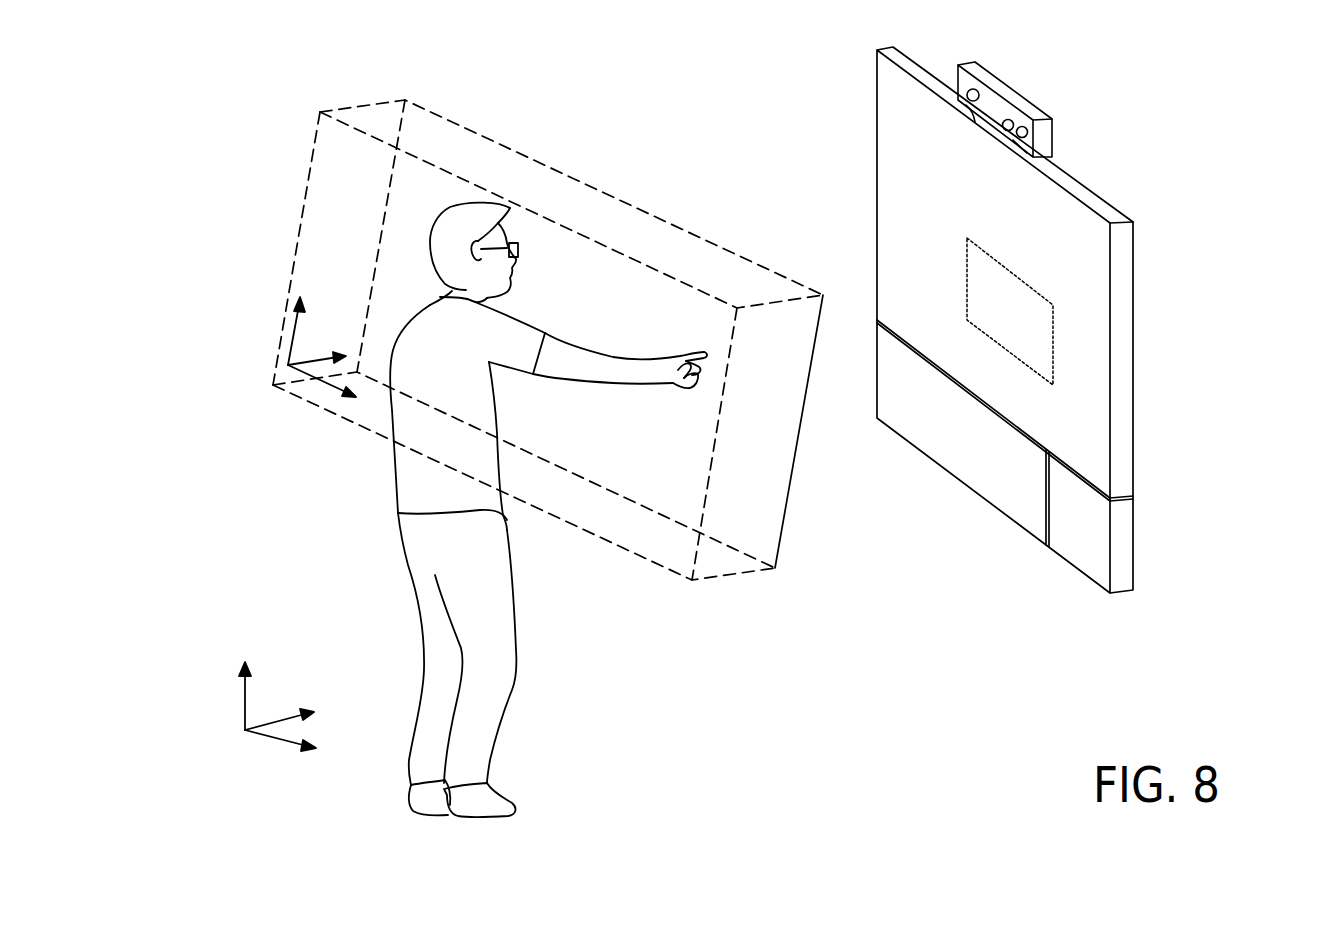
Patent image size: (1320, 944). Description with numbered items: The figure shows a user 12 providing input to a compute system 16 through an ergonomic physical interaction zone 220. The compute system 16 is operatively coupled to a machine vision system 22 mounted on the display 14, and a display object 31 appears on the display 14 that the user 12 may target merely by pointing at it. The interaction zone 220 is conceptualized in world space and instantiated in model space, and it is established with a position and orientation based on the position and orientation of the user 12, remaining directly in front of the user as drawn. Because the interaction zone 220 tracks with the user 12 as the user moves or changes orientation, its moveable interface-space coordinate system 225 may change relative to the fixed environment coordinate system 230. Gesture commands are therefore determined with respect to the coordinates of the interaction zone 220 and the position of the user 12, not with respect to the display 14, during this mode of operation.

The user 12 is at (548, 510).
The display 14 is at (1005, 320).
The compute system 16 is at (1182, 116).
The machine vision system 22 is at (1054, 146).
The display object 31 is at (1010, 311).
The interaction zone 220 is at (722, 578).
The interface-space coordinate system 225 is at (226, 770).
The environment coordinate system 230 is at (272, 398).